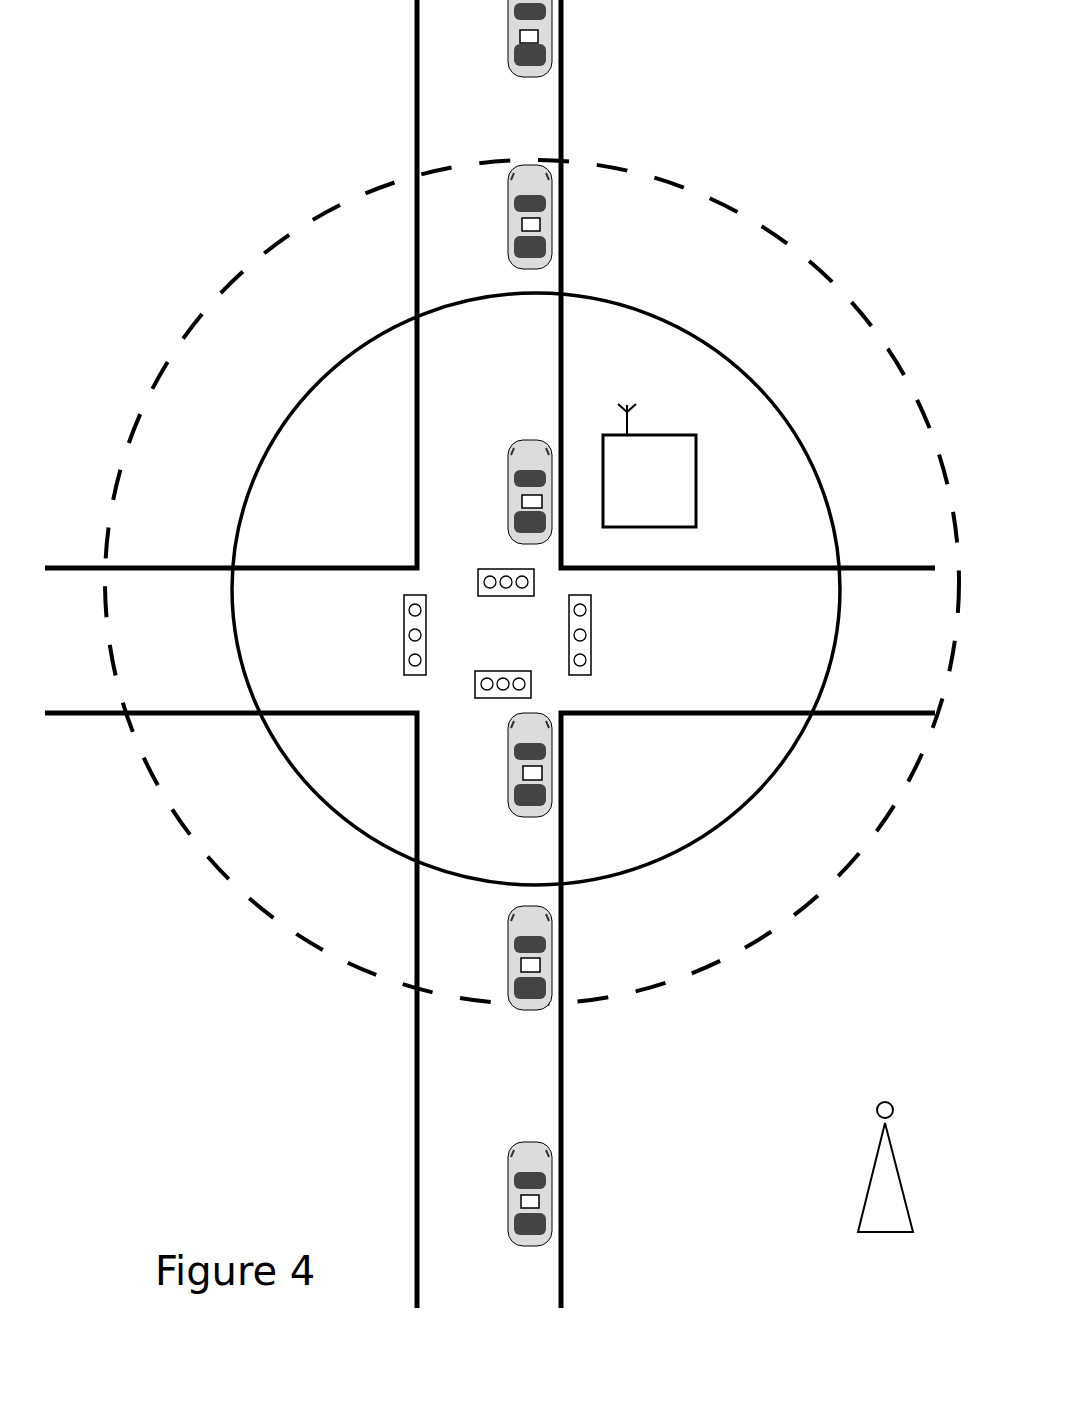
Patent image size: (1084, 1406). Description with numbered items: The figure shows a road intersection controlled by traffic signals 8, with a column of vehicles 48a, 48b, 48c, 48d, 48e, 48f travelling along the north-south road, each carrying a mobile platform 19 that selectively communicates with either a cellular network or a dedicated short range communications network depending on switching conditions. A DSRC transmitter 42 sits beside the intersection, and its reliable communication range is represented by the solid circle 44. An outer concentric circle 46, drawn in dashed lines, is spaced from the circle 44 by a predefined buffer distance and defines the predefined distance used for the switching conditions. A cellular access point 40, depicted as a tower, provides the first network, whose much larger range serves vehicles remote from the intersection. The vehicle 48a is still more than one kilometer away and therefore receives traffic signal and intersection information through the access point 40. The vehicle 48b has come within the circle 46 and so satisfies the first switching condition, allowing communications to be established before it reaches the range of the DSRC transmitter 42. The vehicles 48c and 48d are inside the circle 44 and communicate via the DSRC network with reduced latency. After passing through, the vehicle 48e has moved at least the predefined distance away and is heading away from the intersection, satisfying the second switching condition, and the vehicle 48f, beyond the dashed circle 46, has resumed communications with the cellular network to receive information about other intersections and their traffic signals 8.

The traffic signal 8 is at (507, 596).
The mobile platform 19 is at (520, 37).
The access point 40 is at (868, 1192).
The DSRC transmitter 42 is at (673, 435).
The circle 44 is at (760, 379).
The outer concentric circle 46 is at (845, 877).
The vehicle 48a is at (548, 1190).
The vehicle 48b is at (548, 952).
The vehicle 48c is at (548, 762).
The vehicle 48d is at (507, 490).
The vehicle 48e is at (540, 206).
The vehicle 48f is at (540, 30).